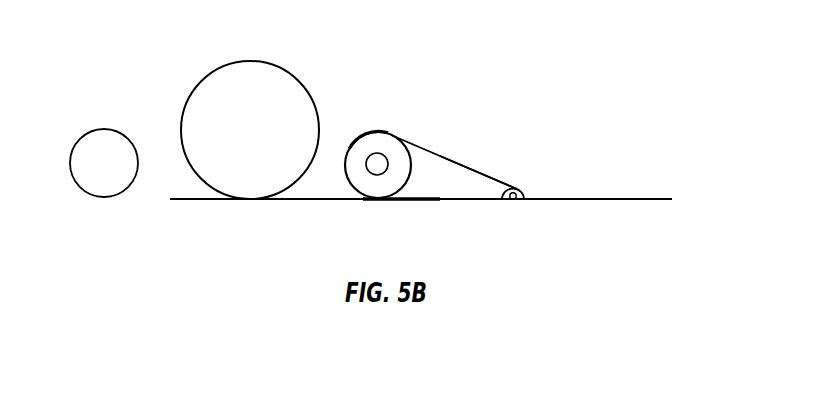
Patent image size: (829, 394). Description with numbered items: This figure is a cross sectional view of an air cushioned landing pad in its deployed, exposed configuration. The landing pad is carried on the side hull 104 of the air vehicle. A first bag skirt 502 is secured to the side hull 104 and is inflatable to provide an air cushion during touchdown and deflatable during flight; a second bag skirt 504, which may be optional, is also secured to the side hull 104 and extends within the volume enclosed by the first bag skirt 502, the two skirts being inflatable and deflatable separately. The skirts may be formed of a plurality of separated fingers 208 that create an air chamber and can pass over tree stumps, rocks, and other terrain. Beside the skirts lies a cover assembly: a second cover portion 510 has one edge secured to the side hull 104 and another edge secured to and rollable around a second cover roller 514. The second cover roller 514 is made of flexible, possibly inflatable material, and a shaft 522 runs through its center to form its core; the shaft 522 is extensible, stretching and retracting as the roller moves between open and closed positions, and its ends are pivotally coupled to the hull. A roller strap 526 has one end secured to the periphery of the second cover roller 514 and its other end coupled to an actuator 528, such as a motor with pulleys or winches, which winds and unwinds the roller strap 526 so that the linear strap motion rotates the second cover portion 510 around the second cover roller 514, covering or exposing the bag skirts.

The side hull 104 is at (608, 188).
The fingers 208 is at (101, 110).
The first bag skirt 502 is at (300, 203).
The second bag skirt 504 is at (120, 172).
The second cover portion 510 is at (350, 124).
The second cover roller 514 is at (415, 166).
The shaft 522 is at (382, 156).
The roller strap 526 is at (468, 157).
The actuator 528 is at (527, 193).